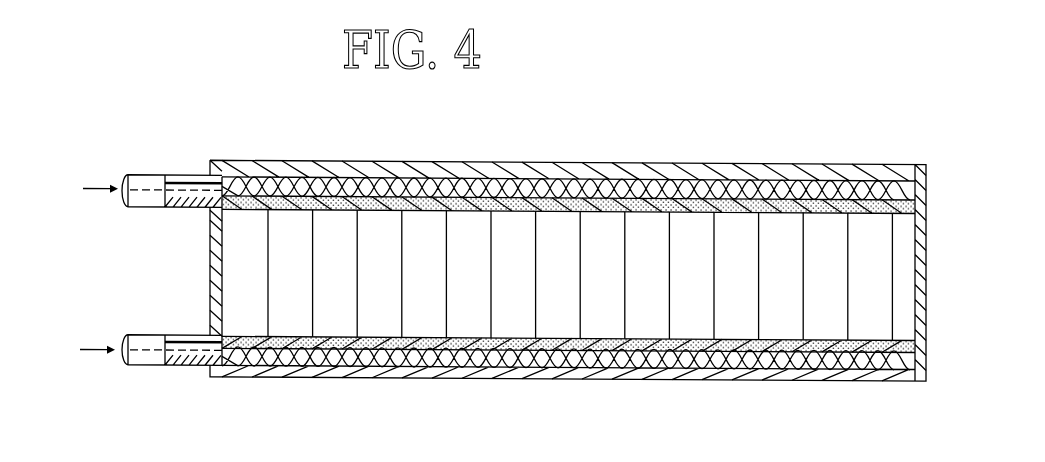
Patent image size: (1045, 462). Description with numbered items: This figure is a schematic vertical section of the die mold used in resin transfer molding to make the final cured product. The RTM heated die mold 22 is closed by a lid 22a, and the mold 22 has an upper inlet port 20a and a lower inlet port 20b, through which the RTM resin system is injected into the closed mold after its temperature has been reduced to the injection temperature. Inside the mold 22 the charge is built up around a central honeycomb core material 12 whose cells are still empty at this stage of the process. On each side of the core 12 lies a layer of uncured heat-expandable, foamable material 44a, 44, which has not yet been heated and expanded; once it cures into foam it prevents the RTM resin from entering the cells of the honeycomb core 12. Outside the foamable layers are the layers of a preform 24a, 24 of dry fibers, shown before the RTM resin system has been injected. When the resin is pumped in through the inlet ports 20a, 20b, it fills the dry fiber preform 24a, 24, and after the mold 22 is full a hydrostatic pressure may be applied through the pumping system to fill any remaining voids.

The honeycomb core material 12 is at (235, 231).
The upper inlet port 20a is at (155, 183).
The lower inlet port 20b is at (152, 340).
The lid 22a is at (480, 166).
The RTM heated die mold 22 is at (406, 369).
The preform of dry fibers 24a is at (578, 190).
The lower coil member 24 is at (520, 362).
The heat-expandable, foamable material 44a is at (725, 198).
The lower filler layer 44 is at (625, 342).